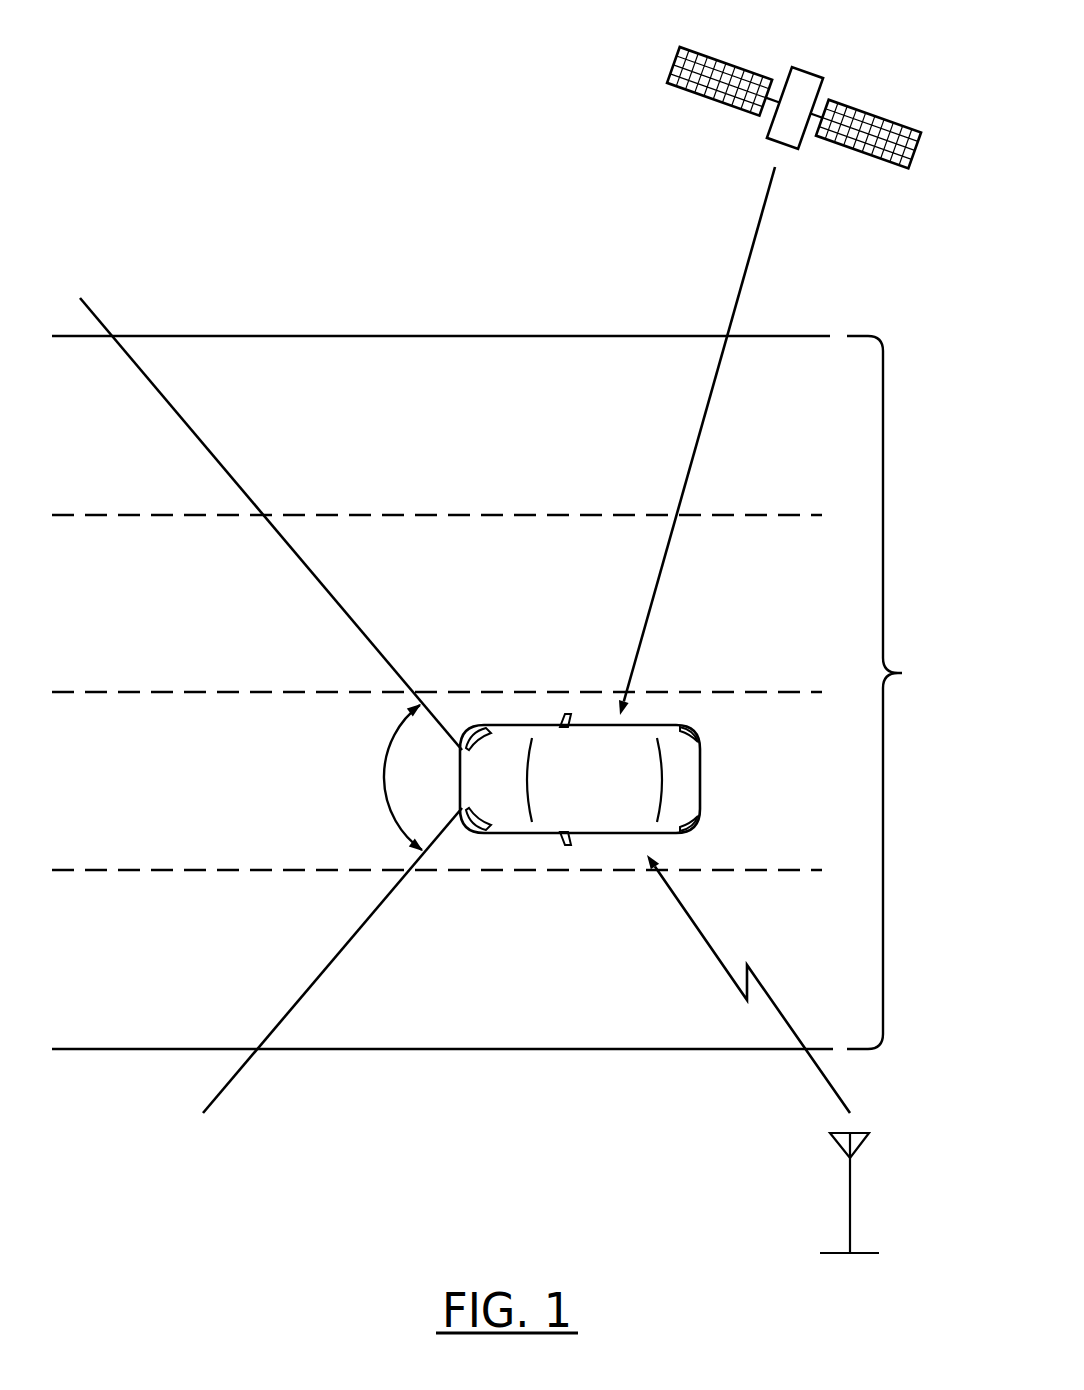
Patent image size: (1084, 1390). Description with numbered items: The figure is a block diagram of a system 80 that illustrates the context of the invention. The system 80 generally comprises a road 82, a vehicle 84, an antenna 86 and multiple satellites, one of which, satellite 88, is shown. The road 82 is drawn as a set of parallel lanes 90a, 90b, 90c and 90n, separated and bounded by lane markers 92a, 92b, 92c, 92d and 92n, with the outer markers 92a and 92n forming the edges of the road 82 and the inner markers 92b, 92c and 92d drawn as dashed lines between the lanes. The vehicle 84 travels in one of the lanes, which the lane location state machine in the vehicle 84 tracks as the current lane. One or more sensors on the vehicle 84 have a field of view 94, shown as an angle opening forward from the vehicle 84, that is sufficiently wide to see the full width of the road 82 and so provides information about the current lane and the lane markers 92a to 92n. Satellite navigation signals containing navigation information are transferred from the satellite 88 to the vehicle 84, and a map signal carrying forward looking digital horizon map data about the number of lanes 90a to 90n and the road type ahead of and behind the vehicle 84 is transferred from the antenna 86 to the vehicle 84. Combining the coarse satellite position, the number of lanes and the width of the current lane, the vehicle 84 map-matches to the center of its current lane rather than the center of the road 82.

The system 80 is at (268, 37).
The road 82 is at (495, 675).
The vehicle 84 is at (703, 781).
The antenna 86 is at (856, 1133).
The satellite 88 is at (807, 71).
The lane 90n is at (113, 439).
The lane 90c is at (113, 617).
The lane 90b is at (113, 792).
The lane 90a is at (113, 972).
The lane marker 92n is at (453, 336).
The lane marker 92d is at (453, 515).
The lane marker 92c is at (298, 692).
The lane marker 92b is at (298, 870).
The lane marker 92a is at (453, 1049).
The field of view 94 is at (373, 791).